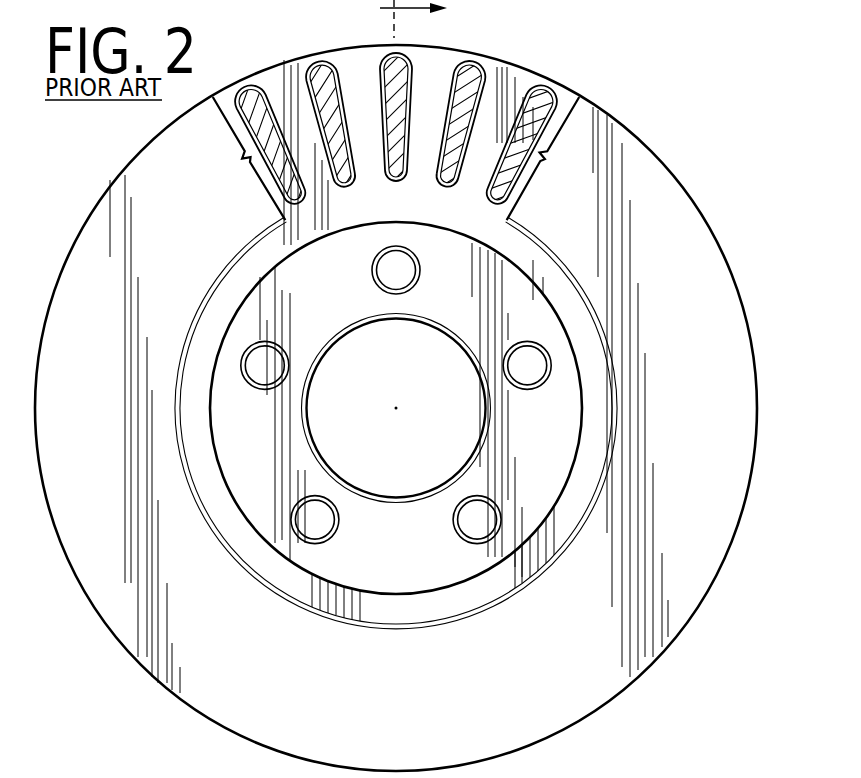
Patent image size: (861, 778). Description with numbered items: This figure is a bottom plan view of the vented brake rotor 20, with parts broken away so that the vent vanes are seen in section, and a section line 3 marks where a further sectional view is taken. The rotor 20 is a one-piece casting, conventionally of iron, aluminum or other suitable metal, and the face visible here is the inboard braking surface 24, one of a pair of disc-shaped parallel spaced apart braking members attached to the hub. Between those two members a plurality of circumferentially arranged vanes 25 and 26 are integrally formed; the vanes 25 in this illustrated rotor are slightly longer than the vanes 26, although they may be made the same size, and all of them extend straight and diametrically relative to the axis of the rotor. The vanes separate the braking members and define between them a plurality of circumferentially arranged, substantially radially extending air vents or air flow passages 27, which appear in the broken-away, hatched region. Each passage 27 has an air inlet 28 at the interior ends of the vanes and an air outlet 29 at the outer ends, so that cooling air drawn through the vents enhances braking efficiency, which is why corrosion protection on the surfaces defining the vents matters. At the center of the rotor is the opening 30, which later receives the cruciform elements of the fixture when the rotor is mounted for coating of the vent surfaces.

The section line 3- 3 is at (404, 19).
The vented brake rotor 20 is at (740, 277).
The inboard braking surface 24 is at (736, 371).
The vanes 25 is at (410, 63).
The vanes 26 is at (324, 66).
The air flow passages 27 is at (353, 103).
The air inlet 28 is at (363, 203).
The air outlet 29 is at (357, 60).
The opening 30 is at (481, 390).